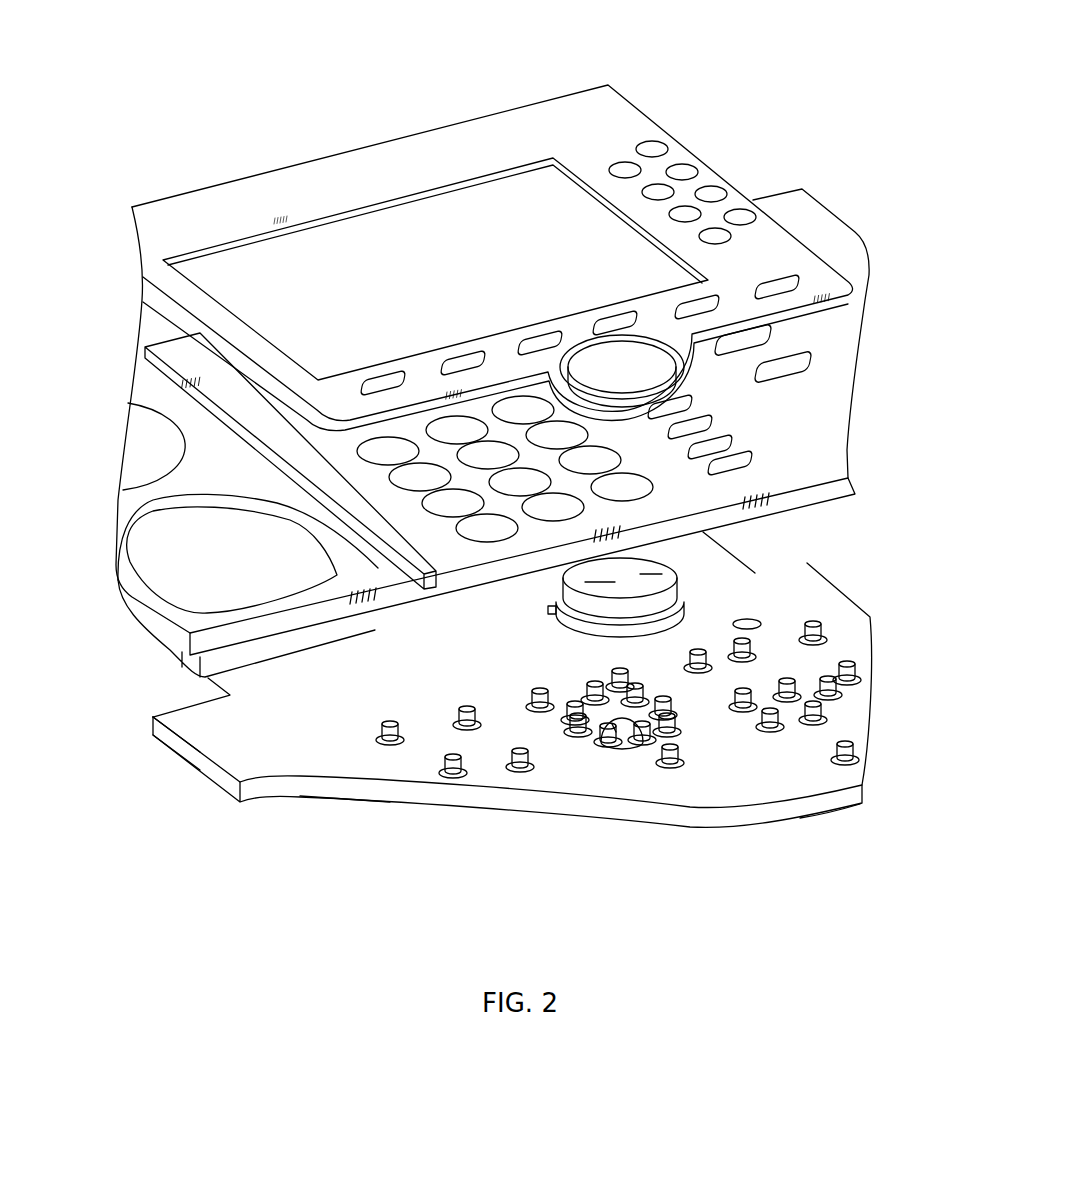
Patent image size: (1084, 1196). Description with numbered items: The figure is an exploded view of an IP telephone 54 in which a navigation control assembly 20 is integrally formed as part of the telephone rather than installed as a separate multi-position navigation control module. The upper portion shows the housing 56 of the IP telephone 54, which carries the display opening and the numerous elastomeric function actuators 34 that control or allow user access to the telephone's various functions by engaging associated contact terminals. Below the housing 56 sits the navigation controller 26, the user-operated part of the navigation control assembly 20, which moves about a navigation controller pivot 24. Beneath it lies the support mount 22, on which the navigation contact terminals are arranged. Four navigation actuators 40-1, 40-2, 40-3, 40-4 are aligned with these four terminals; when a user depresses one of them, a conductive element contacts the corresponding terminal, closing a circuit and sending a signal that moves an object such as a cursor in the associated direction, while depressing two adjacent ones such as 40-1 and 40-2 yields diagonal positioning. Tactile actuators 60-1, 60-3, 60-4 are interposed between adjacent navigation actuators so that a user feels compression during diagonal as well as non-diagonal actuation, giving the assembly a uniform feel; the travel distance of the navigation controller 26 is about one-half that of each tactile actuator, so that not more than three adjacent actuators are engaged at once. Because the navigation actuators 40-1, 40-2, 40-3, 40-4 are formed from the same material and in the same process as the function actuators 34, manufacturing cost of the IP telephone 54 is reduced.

The navigation control assembly 20 is at (650, 686).
The support mount 22 is at (222, 748).
The navigation controller pivot 24 is at (625, 755).
The navigation controller 26 is at (676, 579).
The function actuators 34 is at (378, 803).
The navigation actuator 40-1 is at (667, 745).
The navigation actuator 40-2 is at (577, 742).
The navigation actuator 40-3 is at (592, 700).
The navigation actuator 40-4 is at (683, 719).
The IP telephone 54 is at (640, 90).
The housing 56 is at (780, 207).
The tactile actuator 60-1 is at (606, 756).
The tactile actuator 60-3 is at (538, 722).
The tactile actuator 60-4 is at (682, 745).